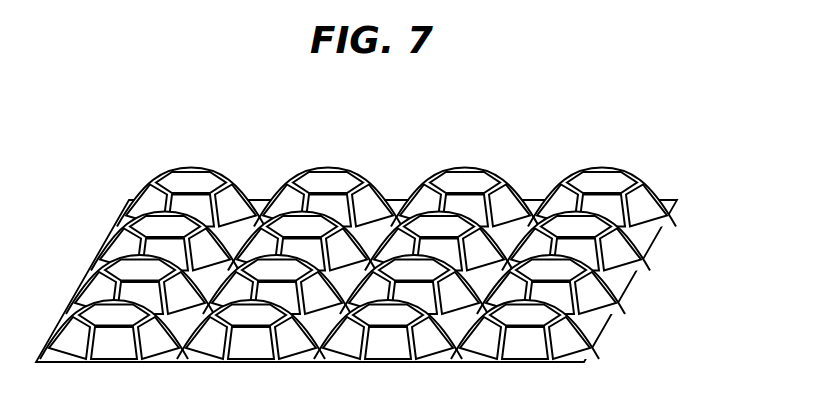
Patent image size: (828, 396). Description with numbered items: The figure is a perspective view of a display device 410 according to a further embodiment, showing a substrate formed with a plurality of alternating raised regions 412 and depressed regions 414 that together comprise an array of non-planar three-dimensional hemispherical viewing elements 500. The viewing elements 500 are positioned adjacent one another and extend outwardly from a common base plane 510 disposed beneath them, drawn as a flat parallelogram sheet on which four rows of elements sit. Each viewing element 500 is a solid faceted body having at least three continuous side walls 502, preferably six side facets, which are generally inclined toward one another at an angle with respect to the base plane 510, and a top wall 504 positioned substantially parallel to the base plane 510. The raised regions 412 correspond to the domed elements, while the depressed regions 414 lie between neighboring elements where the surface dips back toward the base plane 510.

The viewing elements 500 is at (186, 154).
The display device 410 is at (584, 142).
The raised regions 412 is at (333, 170).
The depressed regions 414 is at (387, 188).
The side walls 502 is at (637, 200).
The top wall 504 is at (603, 177).
The base plane 510 is at (597, 327).